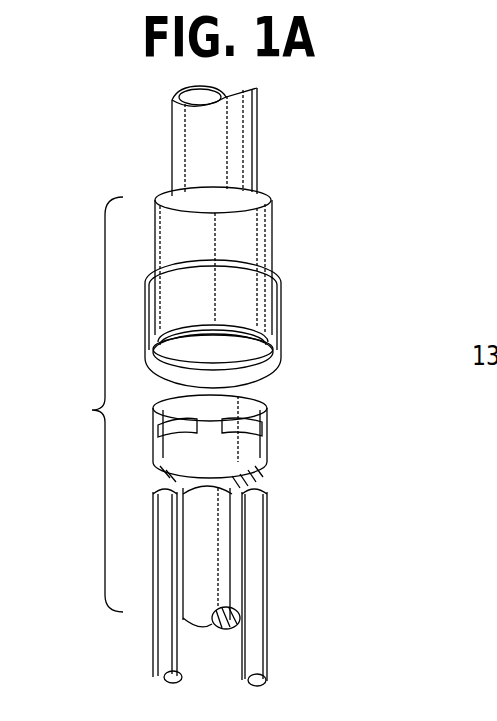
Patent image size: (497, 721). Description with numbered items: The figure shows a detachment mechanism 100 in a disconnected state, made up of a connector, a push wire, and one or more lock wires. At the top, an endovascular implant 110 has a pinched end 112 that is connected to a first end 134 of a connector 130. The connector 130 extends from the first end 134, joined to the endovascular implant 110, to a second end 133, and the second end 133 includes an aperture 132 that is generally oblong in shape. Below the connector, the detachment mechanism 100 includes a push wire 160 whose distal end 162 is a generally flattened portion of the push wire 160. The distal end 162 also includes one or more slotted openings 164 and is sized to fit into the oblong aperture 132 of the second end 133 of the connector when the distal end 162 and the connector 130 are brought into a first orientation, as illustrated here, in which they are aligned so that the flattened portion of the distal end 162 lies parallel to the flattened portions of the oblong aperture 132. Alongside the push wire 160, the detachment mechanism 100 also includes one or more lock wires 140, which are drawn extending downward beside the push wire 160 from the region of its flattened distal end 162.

The detachment mechanism 100 is at (83, 404).
The endovascular implant 110 is at (243, 148).
The pinched end 112 is at (187, 185).
The connector 130 is at (282, 288).
The aperture 132 is at (264, 366).
The second end 133 is at (281, 327).
The first end 134 is at (262, 236).
The lock wires 140 is at (167, 645).
The push wire 160 is at (232, 579).
The distal end 162 is at (262, 460).
The slotted openings 164 is at (263, 423).